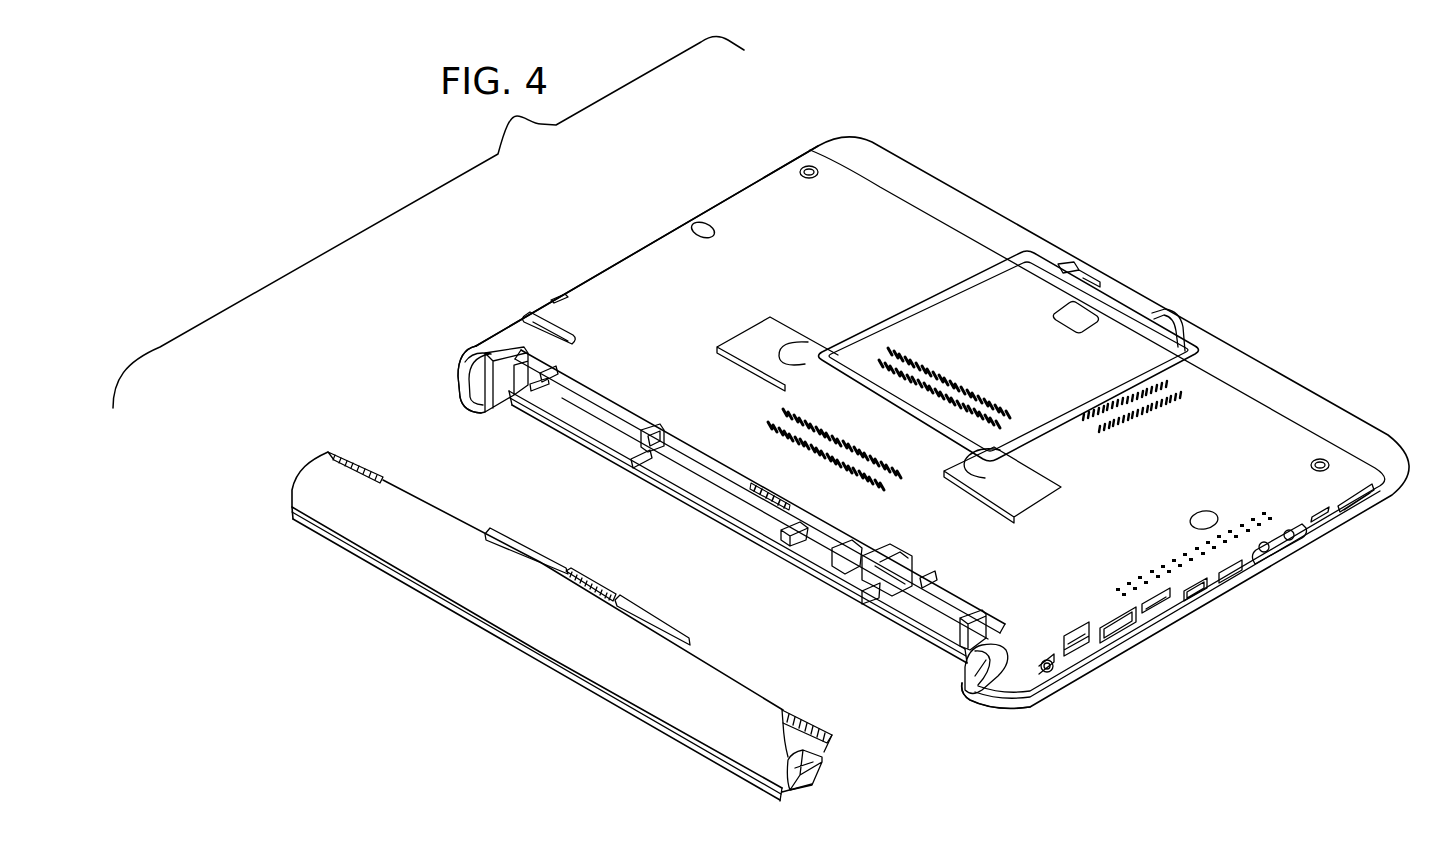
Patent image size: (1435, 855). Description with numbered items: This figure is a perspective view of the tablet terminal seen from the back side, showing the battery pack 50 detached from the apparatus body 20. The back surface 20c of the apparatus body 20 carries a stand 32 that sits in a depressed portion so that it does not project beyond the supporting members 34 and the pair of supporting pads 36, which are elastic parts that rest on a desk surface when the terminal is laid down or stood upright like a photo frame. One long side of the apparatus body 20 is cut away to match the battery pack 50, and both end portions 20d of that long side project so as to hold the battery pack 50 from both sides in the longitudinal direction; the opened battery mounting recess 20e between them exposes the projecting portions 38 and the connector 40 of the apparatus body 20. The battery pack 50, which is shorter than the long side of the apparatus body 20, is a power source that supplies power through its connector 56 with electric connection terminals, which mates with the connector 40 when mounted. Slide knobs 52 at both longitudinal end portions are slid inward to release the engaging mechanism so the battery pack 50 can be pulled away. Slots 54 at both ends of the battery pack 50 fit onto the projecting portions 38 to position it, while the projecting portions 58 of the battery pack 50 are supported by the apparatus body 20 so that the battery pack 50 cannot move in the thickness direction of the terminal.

The apparatus body 20 is at (1034, 205).
The back surface 20c is at (622, 274).
The end portions 20d is at (460, 337).
The battery mounting recess 20e is at (691, 463).
The stand 32 is at (1127, 310).
The supporting member 34 is at (464, 378).
The supporting pads 36 is at (805, 164).
The projecting portions 38 is at (498, 401).
The connector 40 is at (761, 518).
The battery pack 50 is at (490, 674).
The slide knobs 52 is at (350, 448).
The slots 54 is at (812, 763).
The connector 56 is at (597, 579).
The projecting portions 58 is at (516, 547).